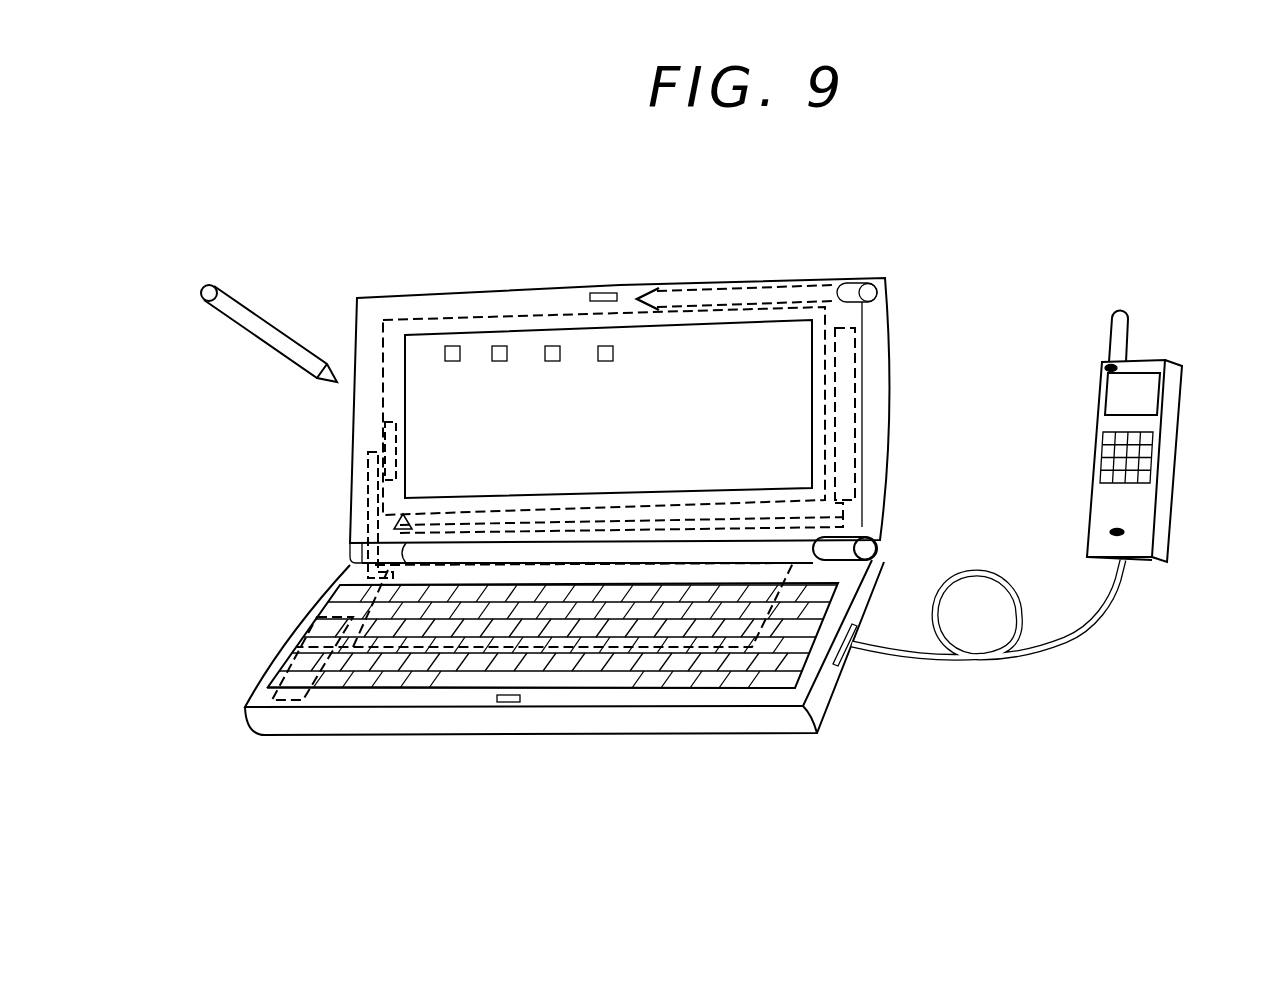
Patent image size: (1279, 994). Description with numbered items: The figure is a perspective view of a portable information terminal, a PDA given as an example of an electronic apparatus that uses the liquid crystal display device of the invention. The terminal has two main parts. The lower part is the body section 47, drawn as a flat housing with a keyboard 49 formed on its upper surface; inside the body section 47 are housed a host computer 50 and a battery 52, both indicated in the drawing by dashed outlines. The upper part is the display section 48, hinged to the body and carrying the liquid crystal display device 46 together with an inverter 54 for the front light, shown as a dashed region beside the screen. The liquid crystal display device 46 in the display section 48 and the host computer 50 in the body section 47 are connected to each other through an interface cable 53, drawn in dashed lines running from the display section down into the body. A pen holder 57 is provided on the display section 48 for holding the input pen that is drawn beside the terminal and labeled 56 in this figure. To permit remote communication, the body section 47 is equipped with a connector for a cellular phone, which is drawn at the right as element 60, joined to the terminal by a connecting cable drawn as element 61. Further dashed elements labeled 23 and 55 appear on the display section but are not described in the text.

The switch 23 is at (387, 433).
The liquid crystal display device 46 is at (398, 325).
The body section 47 is at (577, 720).
The display section 48 is at (548, 300).
The keyboard 49 is at (417, 663).
The host computer 50 is at (407, 578).
The battery 52 is at (273, 698).
The interface cable 53 is at (370, 487).
The inverter 54 is at (858, 367).
The scroll area 55 is at (858, 508).
The stylus pen 56 is at (242, 313).
The pen holder 57 is at (851, 290).
The portable telephone 60 is at (1175, 389).
The cable 61 is at (1077, 626).